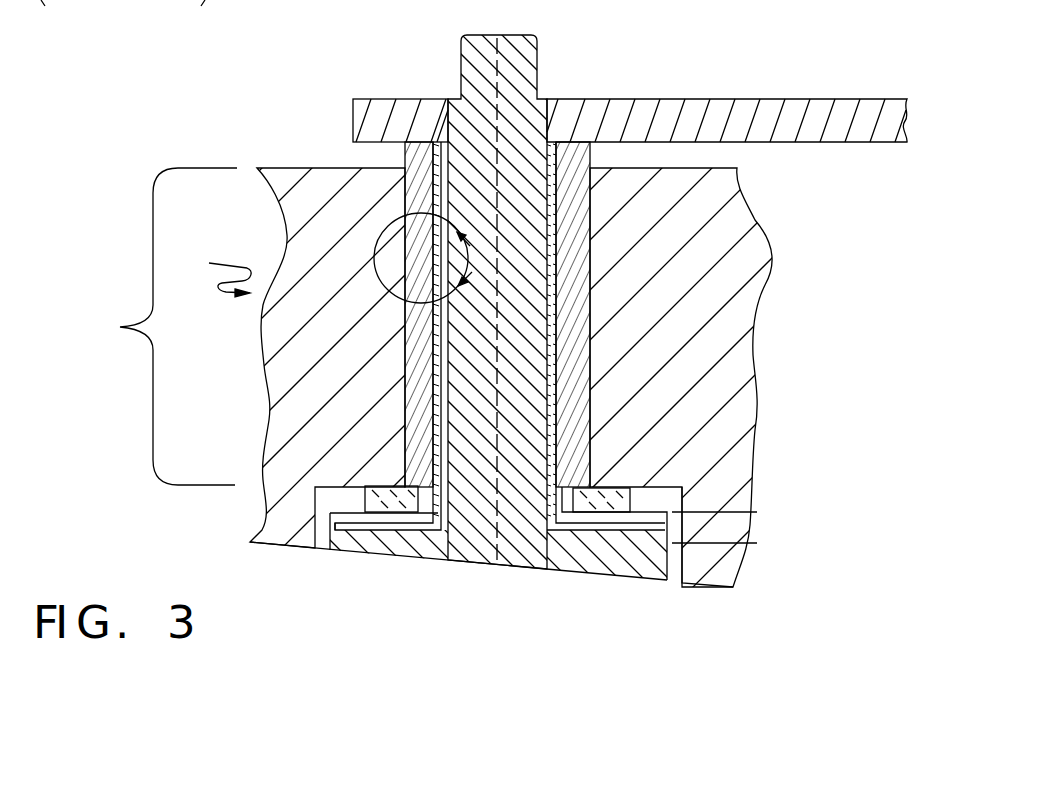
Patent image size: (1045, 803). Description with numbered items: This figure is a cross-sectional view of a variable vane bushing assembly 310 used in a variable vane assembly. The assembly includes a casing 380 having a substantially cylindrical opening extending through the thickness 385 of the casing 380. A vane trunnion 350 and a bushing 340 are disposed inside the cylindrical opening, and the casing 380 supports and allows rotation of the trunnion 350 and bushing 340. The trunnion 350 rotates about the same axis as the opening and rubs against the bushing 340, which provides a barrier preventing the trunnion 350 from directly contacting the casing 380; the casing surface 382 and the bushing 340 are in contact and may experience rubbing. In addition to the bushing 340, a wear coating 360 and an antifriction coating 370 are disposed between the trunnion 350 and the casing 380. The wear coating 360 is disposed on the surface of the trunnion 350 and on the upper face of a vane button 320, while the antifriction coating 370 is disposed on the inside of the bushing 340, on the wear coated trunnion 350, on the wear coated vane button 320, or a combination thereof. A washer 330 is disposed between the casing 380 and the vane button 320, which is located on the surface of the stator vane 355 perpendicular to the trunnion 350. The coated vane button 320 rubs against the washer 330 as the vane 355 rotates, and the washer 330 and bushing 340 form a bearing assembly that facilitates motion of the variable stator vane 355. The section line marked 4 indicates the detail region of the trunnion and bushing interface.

The vane trunnion 350 is at (502, 33).
The casing surface 382 is at (590, 182).
The casing 380 is at (333, 183).
The antifriction coating 370 is at (558, 204).
The bushing 340 is at (420, 311).
The wear coating 360 is at (548, 342).
The washer 330 is at (392, 508).
The stator vane 355 is at (650, 555).
The vane button 320 is at (757, 512).
The thickness 385 is at (120, 327).
The variable vane bushing assembly 310 is at (208, 274).
The section line 4- 4 is at (434, 258).